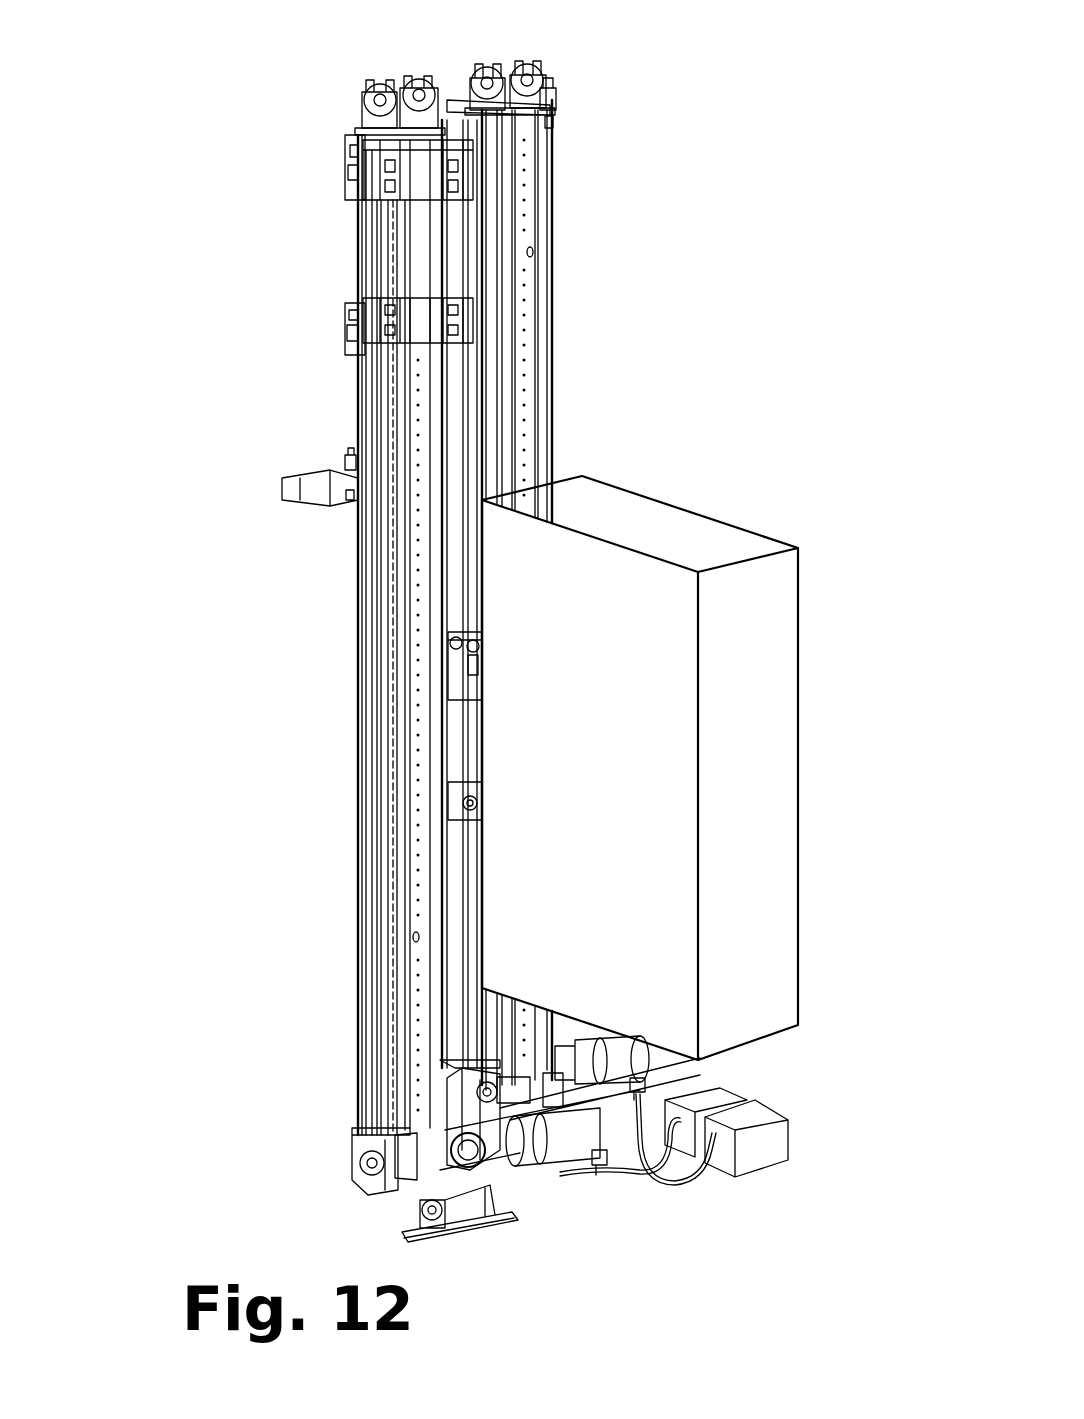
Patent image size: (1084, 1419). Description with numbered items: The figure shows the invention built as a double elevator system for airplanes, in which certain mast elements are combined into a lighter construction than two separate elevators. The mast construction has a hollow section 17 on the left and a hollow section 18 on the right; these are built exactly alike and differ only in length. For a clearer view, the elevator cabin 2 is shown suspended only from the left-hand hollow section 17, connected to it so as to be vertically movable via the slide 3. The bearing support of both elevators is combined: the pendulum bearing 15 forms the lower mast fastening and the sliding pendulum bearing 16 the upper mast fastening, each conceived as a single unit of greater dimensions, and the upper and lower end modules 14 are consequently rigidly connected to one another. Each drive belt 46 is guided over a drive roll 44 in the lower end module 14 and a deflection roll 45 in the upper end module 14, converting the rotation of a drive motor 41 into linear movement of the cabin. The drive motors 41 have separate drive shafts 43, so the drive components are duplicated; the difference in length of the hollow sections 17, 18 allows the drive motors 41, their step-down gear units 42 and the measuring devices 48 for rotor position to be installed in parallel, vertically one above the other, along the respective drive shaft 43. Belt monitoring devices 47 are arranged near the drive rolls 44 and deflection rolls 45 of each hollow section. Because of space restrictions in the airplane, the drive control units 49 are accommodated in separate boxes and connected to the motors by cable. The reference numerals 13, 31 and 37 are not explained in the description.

The elevator cabin 2 is at (540, 920).
The slide 3 is at (473, 695).
The mast profile 13 is at (370, 742).
The end module 14 is at (450, 85).
The pendulum bearing 15 is at (420, 1220).
The sliding pendulum bearing 16 is at (307, 470).
The hollow section 17 is at (380, 395).
The hollow section 18 is at (553, 145).
The carriage 31 is at (360, 147).
The guide bracket 37 is at (358, 185).
The drive motor 41 is at (623, 1087).
The step-down gear unit 42 is at (548, 1135).
The drive shaft 43 is at (455, 1152).
The drive roll 44 is at (505, 1115).
The deflection roll 45 is at (540, 127).
The drive belt 46 is at (405, 460).
The belt monitoring device 47 is at (533, 255).
The measuring device 48 is at (600, 1097).
The drive control unit 49 is at (770, 1153).